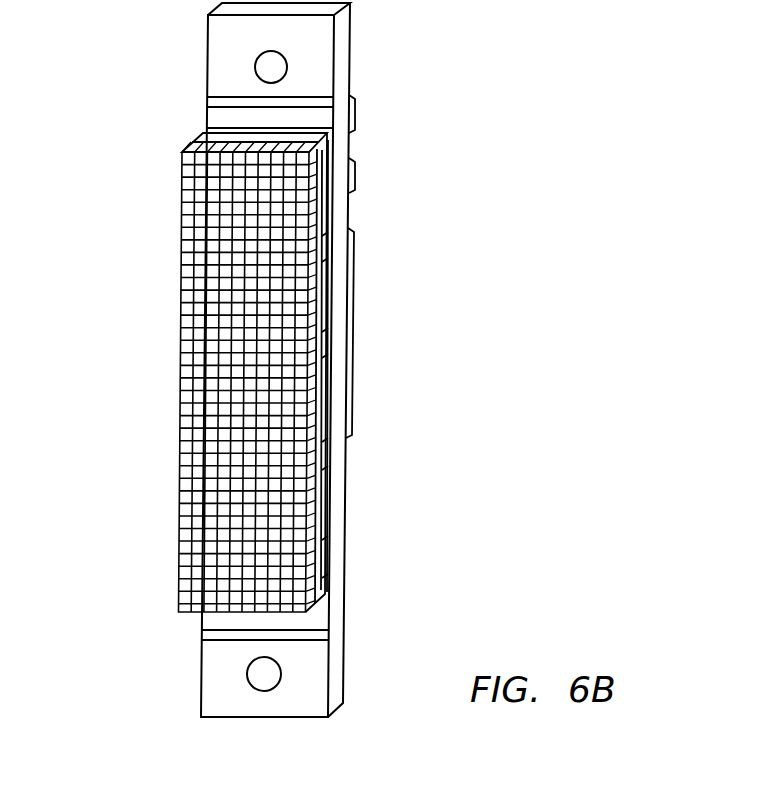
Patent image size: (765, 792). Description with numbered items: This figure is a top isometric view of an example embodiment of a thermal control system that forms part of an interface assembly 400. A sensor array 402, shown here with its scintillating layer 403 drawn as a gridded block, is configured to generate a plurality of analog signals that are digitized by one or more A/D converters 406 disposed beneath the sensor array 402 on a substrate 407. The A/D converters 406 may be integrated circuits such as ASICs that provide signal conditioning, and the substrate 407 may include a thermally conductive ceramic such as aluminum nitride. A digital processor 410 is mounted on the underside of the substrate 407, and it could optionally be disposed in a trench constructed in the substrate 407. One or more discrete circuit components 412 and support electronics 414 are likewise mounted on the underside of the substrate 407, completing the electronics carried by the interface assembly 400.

The interface assembly 400 is at (131, 53).
The sensor array 402 is at (173, 253).
The scintillating layer 403 is at (212, 388).
The A/D converters 406 is at (326, 187).
The substrate 407 is at (337, 462).
The digital processor 410 is at (357, 318).
The discrete circuit components 412 is at (357, 173).
The support electronics 414 is at (357, 108).